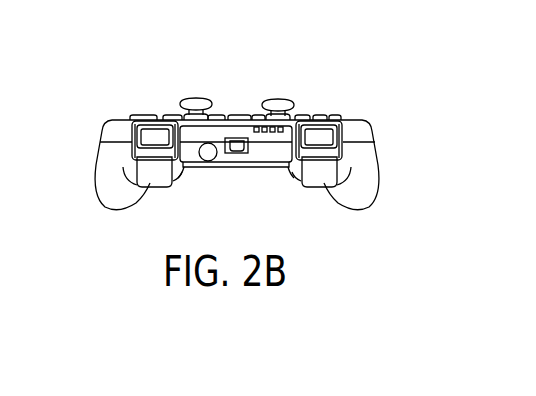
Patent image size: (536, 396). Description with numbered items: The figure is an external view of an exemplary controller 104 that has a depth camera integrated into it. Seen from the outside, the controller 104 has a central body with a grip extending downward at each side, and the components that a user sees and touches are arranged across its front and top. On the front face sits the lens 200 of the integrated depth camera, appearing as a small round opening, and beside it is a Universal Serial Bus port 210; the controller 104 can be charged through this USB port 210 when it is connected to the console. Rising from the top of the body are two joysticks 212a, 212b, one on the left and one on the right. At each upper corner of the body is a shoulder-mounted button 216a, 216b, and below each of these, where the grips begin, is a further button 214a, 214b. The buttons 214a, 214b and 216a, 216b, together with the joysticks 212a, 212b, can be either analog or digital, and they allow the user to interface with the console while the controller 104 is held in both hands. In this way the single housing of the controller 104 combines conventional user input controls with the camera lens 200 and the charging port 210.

The controller 104 is at (363, 122).
The joystick 212a is at (196, 97).
The joystick 212b is at (277, 98).
The button 216a is at (157, 137).
The button 216b is at (328, 137).
The button 214a is at (150, 180).
The button 214b is at (323, 180).
The lens 200 is at (208, 163).
The Universal Serial Bus (USB) port 210 is at (250, 164).